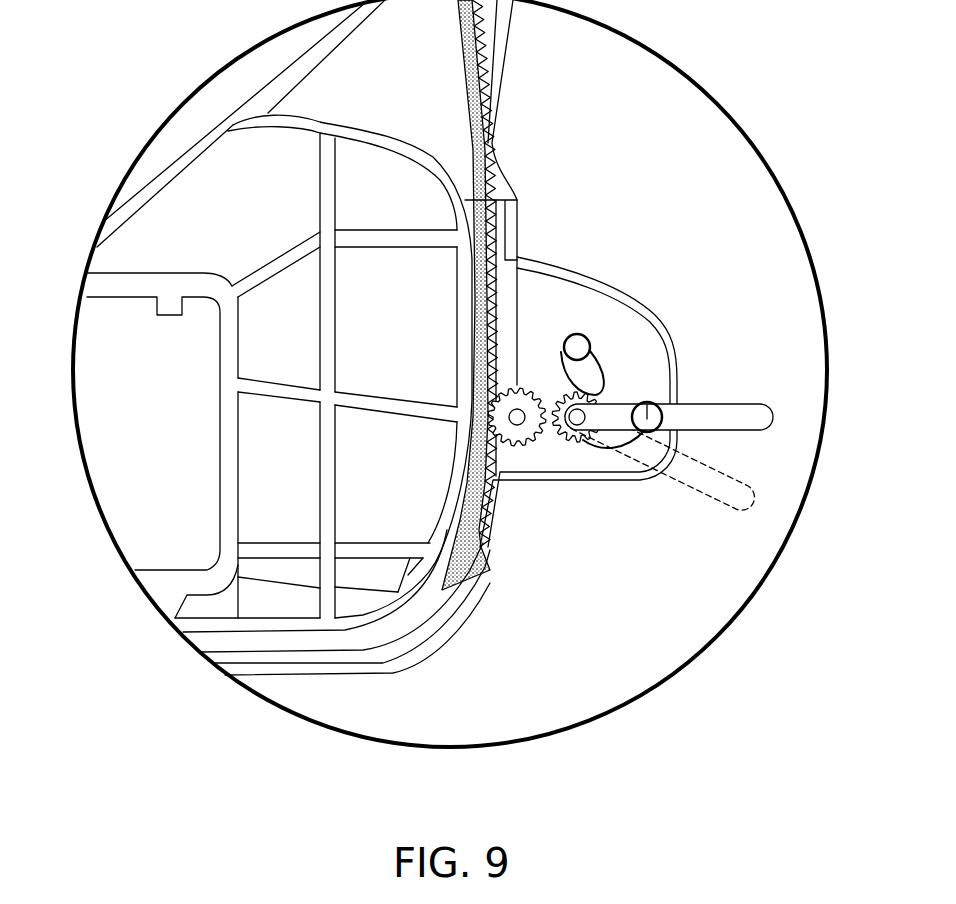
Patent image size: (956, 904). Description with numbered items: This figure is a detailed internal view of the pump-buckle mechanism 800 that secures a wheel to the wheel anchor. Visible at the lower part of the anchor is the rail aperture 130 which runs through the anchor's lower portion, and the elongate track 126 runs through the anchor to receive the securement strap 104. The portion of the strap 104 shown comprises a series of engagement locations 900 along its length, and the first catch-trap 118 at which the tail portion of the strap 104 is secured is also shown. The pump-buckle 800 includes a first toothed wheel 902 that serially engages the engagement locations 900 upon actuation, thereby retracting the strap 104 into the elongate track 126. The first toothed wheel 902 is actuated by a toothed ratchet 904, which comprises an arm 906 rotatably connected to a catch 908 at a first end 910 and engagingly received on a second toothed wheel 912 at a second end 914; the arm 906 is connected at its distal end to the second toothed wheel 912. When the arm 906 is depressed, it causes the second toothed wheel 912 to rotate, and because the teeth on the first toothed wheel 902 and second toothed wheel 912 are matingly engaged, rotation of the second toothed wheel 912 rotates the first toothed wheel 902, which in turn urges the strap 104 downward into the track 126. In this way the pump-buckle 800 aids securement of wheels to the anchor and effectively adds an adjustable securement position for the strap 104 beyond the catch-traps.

The pump-buckle mechanism 800 is at (712, 153).
The rail aperture 130 is at (107, 413).
The track 126 is at (362, 653).
The securement strap 104 is at (480, 128).
The engagement locations 900 is at (500, 247).
The first catch-trap 118 is at (503, 283).
The toothed ratchet 904 is at (642, 348).
The first toothed wheel 902 is at (520, 433).
The second end 914 is at (577, 447).
The catch 908 is at (628, 437).
The arm 906 is at (773, 417).
The first end 910 is at (648, 412).
The second toothed wheel 912 is at (588, 348).